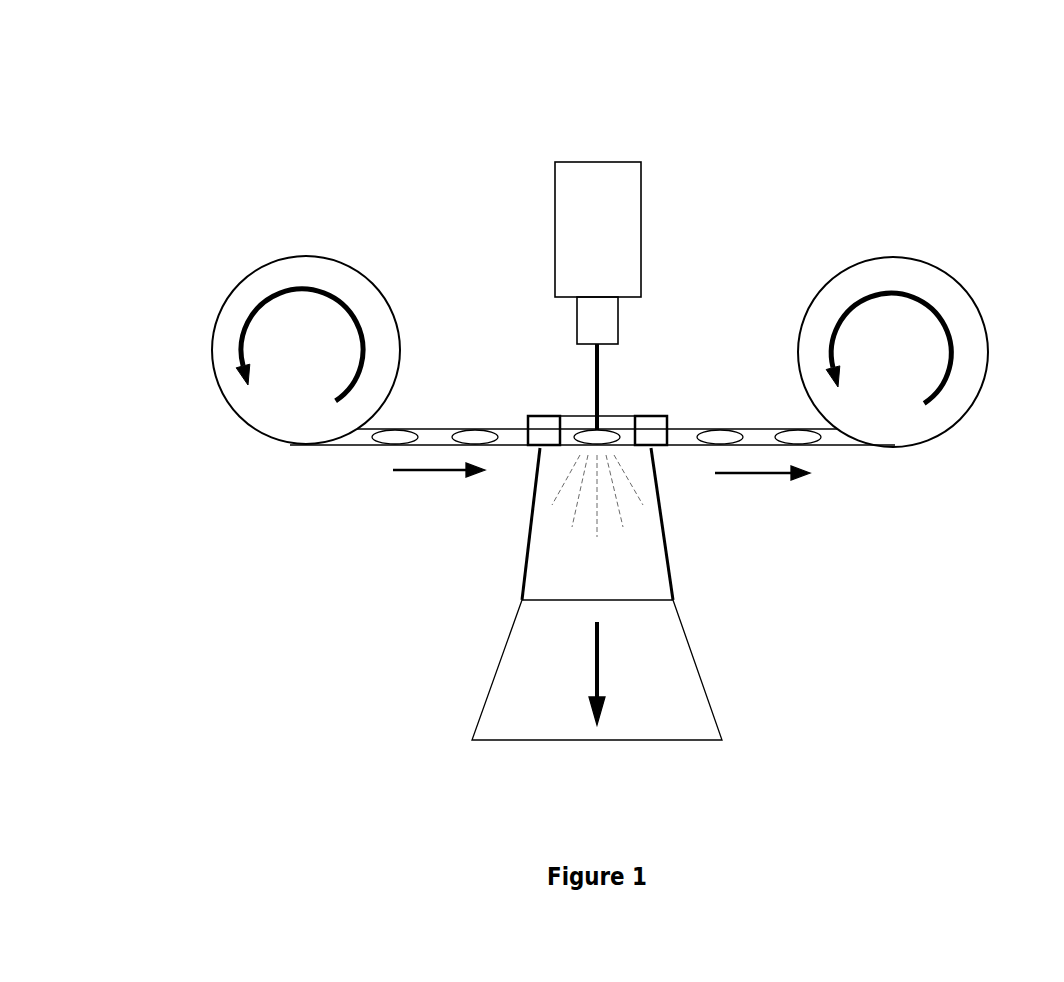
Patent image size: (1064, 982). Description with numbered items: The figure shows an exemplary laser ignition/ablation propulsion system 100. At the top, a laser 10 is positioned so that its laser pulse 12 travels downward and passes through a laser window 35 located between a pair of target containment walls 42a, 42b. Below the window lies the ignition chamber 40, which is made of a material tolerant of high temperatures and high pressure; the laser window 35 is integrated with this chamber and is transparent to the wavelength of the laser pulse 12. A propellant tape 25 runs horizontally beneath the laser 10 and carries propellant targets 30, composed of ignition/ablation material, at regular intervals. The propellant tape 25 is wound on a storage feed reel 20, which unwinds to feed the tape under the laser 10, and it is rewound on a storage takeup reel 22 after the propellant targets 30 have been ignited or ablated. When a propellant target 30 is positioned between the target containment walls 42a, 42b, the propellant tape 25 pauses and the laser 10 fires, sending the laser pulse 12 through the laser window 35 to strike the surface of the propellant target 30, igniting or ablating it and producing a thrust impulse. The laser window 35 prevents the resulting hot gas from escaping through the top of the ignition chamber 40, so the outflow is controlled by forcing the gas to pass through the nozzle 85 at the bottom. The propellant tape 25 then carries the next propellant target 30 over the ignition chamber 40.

The laser ignition/ablation propulsion system 100 is at (598, 82).
The laser 10 is at (641, 188).
The laser pulse 12 is at (597, 378).
The storage feed reel 20 is at (245, 425).
The storage takeup reel 22 is at (945, 432).
The propellant tape 25 is at (357, 445).
The propellant target 30 is at (470, 429).
The laser window 35 is at (610, 416).
The ignition chamber 40 is at (625, 448).
The target containment wall 42a is at (538, 448).
The target containment wall 42b is at (655, 448).
The nozzle 85 is at (503, 660).